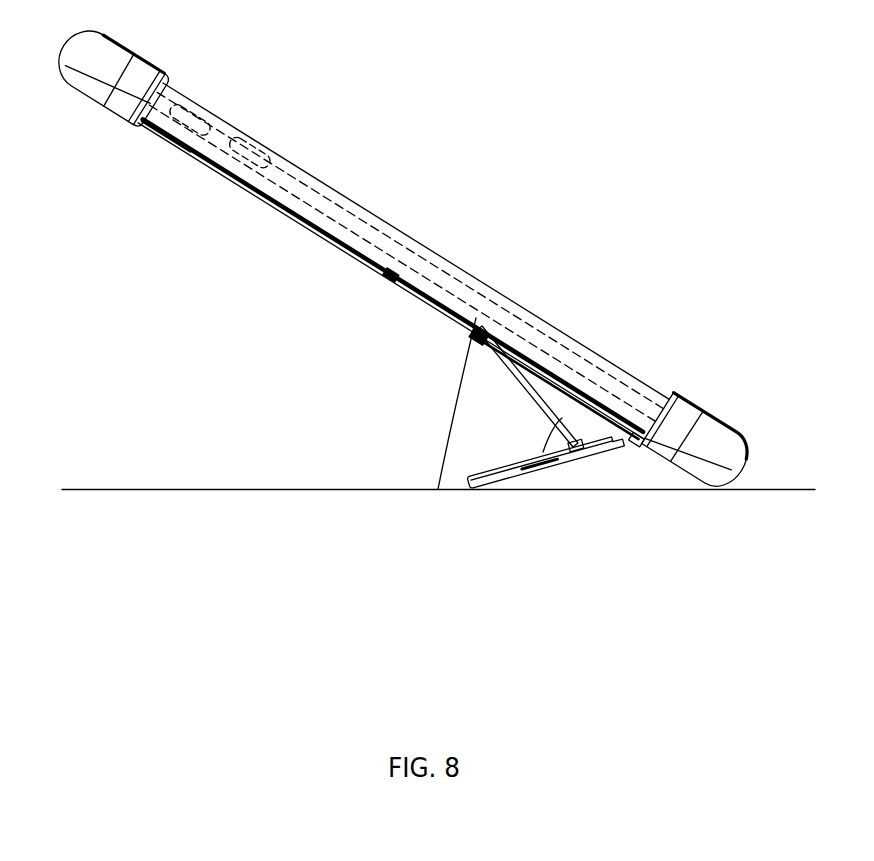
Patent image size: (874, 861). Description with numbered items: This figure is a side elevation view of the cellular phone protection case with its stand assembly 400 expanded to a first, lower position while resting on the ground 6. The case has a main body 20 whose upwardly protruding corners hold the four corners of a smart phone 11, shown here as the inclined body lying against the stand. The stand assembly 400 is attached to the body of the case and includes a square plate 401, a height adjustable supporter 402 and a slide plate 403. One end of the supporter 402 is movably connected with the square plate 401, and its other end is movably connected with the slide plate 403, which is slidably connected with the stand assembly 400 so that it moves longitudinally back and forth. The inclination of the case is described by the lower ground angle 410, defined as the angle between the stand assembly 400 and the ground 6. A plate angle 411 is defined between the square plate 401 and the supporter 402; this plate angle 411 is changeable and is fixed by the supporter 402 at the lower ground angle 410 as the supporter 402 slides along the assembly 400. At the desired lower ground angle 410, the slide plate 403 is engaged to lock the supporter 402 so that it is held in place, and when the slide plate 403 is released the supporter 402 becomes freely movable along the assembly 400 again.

The ground 6 is at (231, 490).
The smart phone 11 is at (570, 358).
The main body 20 is at (180, 147).
The stand assembly 400 is at (455, 317).
The square plate 401 is at (600, 452).
The height adjustable supporter 402 is at (530, 392).
The slide plate 403 is at (476, 318).
The lower ground angle 410 is at (447, 423).
The plate angle 411 is at (543, 438).